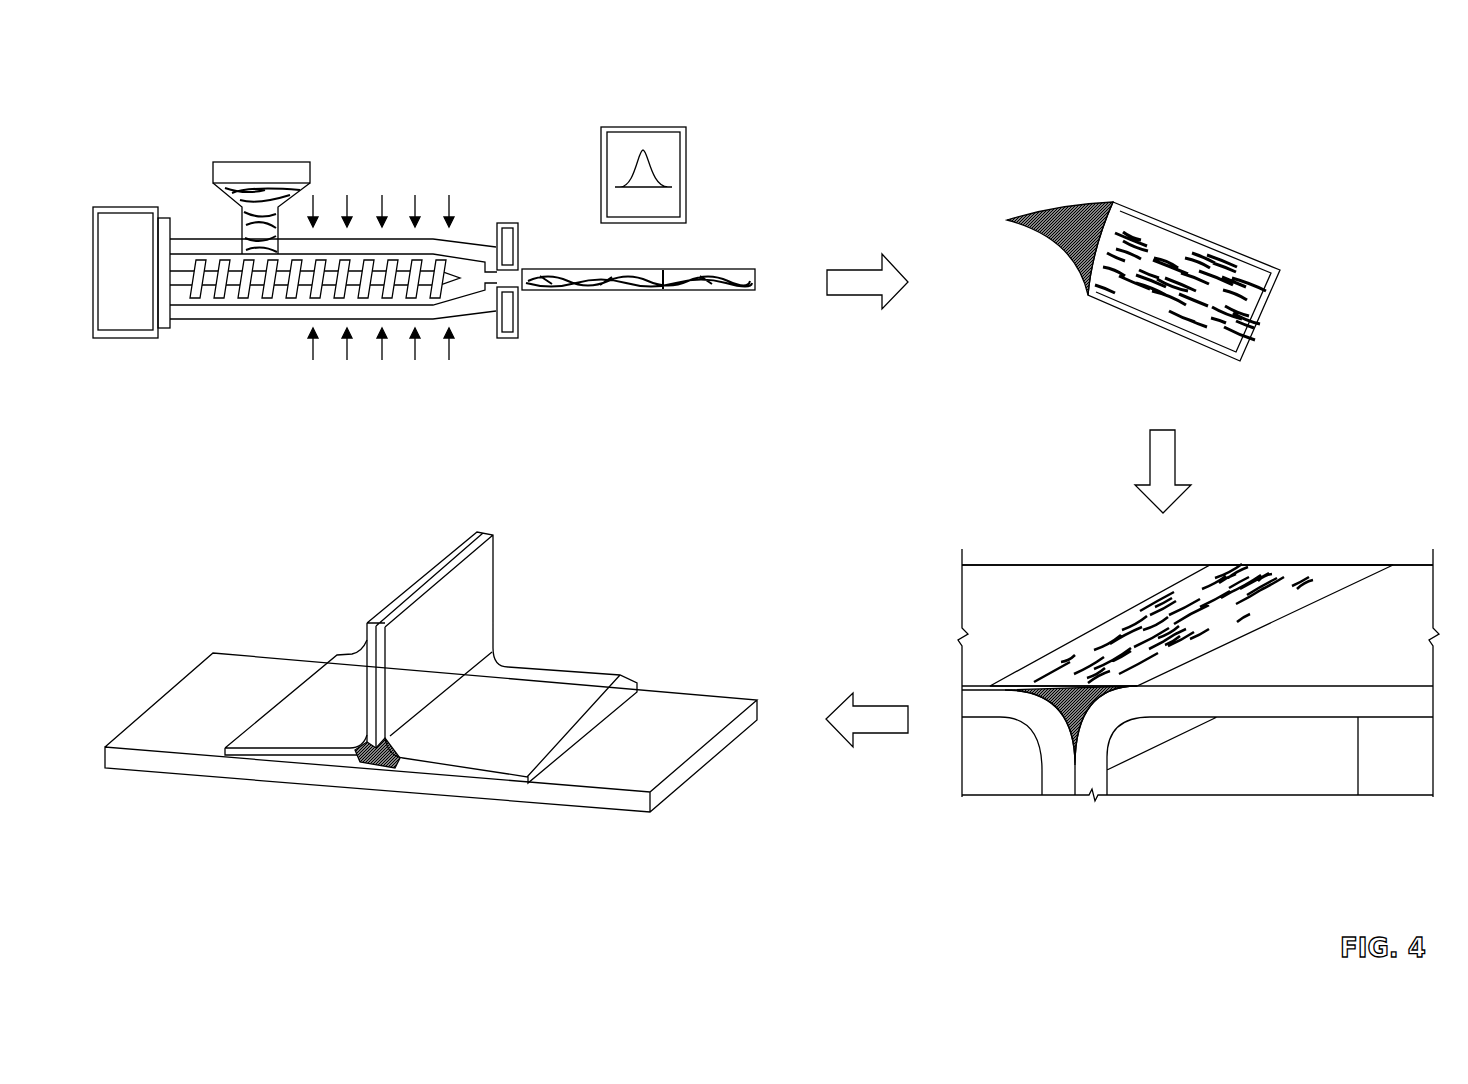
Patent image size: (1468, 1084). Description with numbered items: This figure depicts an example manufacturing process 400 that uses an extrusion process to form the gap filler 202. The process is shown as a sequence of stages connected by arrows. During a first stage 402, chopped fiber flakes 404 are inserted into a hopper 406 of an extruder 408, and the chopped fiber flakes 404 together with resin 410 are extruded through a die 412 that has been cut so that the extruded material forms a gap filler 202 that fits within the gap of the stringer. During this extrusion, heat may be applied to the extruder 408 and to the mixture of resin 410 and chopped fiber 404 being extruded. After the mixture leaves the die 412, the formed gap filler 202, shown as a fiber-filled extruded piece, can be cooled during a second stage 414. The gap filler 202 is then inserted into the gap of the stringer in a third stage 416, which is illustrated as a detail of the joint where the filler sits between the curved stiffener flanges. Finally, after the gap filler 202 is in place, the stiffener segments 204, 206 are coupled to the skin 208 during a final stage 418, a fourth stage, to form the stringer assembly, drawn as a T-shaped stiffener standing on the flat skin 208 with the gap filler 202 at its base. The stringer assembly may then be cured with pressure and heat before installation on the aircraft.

The manufacturing process 400 is at (1138, 82).
The first stage 402 is at (428, 117).
The chopped fiber flakes 404 is at (280, 187).
The hopper 406 is at (225, 168).
The extruder 408 is at (273, 310).
The resin 410 is at (272, 190).
The die 412 is at (670, 127).
The second stage 414 is at (1218, 159).
The third stage 416 is at (1045, 481).
The final stage 418 is at (598, 538).
The gap filler 202 is at (1218, 243).
The stiffener segment 204 is at (307, 712).
The stiffener segment 206 is at (550, 677).
The skin 208 is at (630, 803).